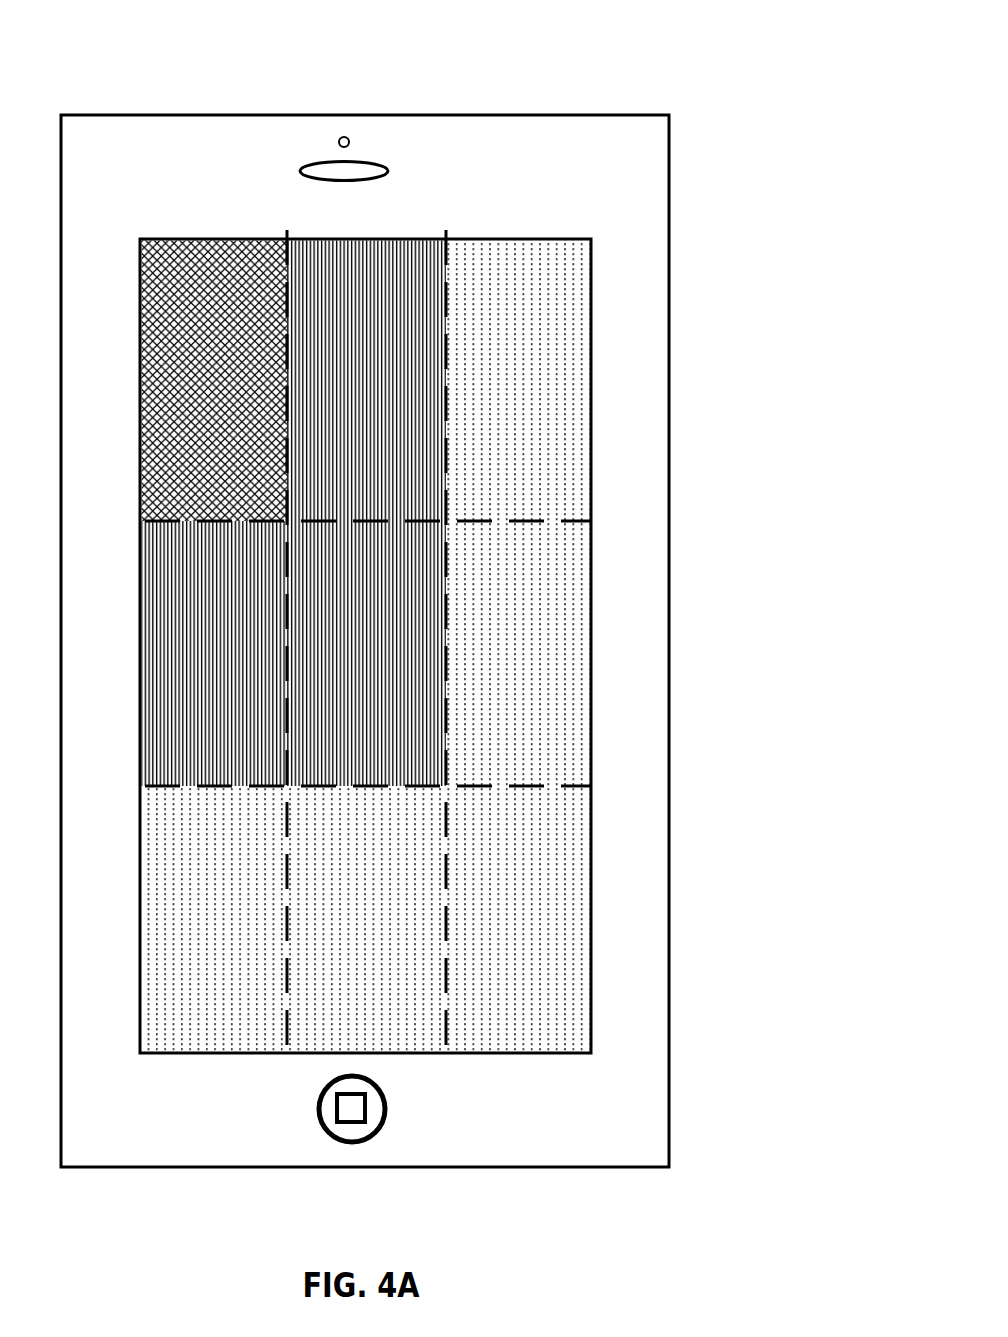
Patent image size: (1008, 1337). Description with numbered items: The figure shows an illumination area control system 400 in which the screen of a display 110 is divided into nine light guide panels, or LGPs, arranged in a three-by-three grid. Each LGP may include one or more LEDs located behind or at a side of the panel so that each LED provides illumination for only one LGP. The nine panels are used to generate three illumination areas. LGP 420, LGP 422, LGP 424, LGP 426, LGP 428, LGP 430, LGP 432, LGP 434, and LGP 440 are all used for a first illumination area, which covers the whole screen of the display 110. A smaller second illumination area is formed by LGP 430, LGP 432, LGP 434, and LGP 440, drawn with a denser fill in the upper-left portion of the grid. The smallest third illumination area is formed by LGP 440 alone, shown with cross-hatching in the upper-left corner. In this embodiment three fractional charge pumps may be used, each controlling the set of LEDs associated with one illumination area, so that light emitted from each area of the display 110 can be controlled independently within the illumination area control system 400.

The illumination area control system 400 is at (846, 22).
The display 110 is at (674, 178).
The LGP 420 is at (497, 397).
The LGP 422 is at (497, 669).
The LGP 424 is at (497, 934).
The LGP 426 is at (341, 934).
The LGP 428 is at (194, 934).
The LGP 430 is at (339, 397).
The LGP 432 is at (339, 669).
The LGP 434 is at (193, 669).
The LGP 440 is at (193, 397).